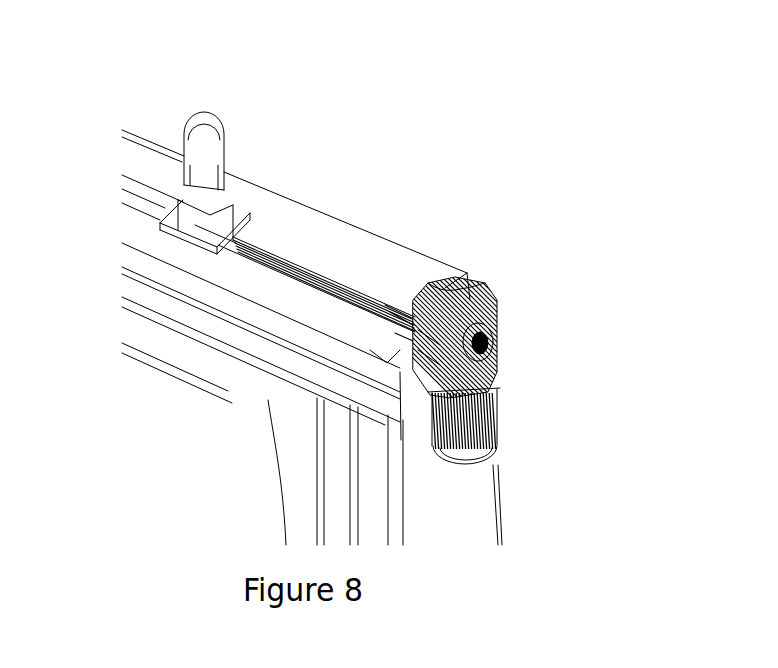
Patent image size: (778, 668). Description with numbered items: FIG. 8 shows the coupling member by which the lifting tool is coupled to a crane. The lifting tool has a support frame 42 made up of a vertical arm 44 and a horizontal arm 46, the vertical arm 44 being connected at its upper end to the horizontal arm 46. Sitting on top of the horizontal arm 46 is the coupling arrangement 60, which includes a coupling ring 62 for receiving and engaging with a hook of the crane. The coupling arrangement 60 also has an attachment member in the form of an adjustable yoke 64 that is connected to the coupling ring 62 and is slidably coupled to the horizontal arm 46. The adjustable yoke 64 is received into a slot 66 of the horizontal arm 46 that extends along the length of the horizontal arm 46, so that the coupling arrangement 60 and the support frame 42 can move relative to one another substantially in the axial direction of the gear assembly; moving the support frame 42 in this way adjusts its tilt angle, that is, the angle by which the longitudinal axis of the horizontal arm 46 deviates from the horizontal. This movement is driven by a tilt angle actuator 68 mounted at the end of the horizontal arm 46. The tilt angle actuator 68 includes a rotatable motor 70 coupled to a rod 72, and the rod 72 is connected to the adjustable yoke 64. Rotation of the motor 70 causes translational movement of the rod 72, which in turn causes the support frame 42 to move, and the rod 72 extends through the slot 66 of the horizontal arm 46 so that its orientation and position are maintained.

The support frame 42 is at (508, 213).
The vertical arm 44 is at (483, 503).
The horizontal arm 46 is at (399, 270).
The coupling arrangement 60 is at (168, 114).
The coupling ring 62 is at (211, 134).
The adjustable yoke 64 is at (237, 216).
The slot 66 is at (308, 260).
The tilt angle actuator 68 is at (486, 355).
The rotatable motor 70 is at (483, 398).
The rod 72 is at (337, 285).